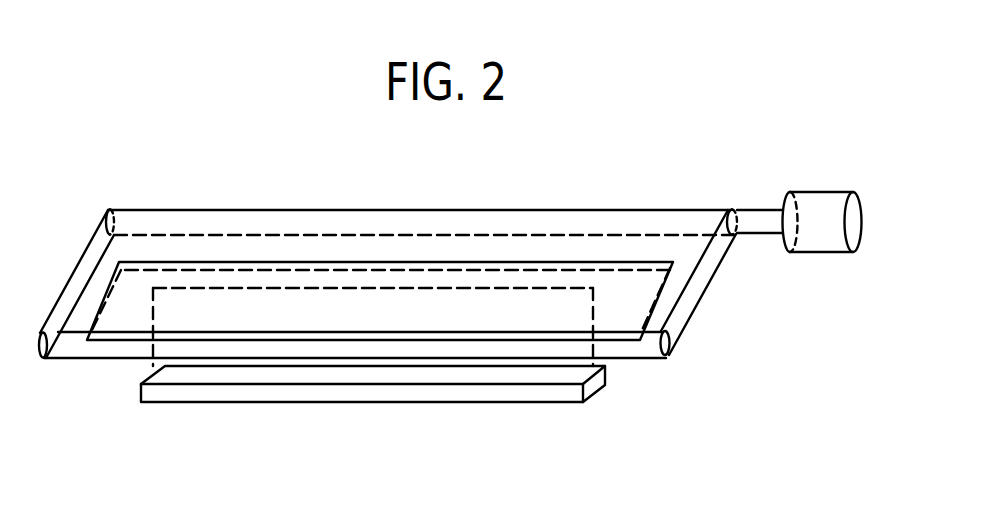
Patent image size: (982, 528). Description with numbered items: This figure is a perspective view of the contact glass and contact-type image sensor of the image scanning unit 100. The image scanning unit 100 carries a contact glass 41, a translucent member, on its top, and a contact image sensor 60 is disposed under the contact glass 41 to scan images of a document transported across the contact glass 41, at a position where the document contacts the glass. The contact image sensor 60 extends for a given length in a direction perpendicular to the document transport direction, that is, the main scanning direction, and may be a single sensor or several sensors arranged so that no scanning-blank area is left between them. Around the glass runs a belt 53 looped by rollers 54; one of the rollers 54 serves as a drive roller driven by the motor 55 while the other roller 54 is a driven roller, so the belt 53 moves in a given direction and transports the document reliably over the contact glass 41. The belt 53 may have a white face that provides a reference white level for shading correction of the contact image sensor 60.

The image scanning unit 100 is at (145, 165).
The belt 53 is at (80, 262).
The rollers 54 is at (742, 207).
The motor 55 is at (821, 190).
The contact glass 41 is at (100, 304).
The contact image sensor 60 is at (141, 393).